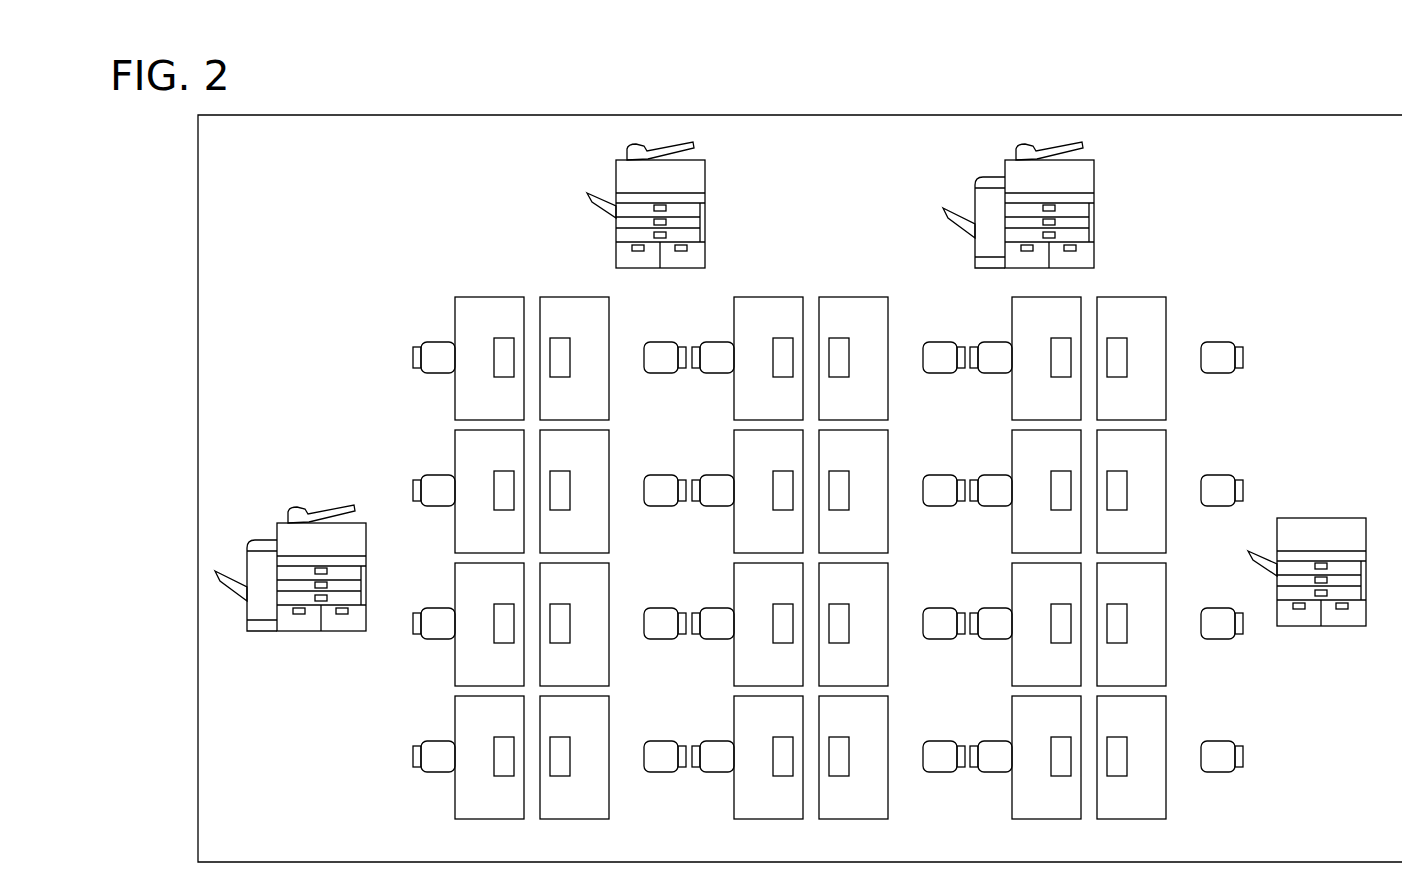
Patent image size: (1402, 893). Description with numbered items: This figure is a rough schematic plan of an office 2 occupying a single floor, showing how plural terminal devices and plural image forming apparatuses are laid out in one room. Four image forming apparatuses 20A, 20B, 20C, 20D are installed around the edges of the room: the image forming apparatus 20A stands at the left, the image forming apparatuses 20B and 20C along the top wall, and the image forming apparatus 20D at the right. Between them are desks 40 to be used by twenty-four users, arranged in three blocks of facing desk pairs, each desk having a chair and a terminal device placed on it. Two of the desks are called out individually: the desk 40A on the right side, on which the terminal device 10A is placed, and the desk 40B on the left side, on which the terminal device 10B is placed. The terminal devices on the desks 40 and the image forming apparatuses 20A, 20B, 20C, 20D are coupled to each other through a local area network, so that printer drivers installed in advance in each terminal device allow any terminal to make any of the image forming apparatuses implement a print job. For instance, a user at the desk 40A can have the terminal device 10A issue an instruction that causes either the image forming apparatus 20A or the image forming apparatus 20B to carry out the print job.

The office 2 is at (1361, 115).
The terminal device 10A is at (1120, 497).
The terminal device 10B is at (492, 492).
The image forming apparatus 20A is at (317, 507).
The image forming apparatus 20B is at (707, 173).
The image forming apparatus 20C is at (1096, 173).
The image forming apparatus 20D is at (1323, 518).
The desk 40 is at (1132, 296).
The desk 40A is at (1157, 451).
The desk 40B is at (468, 449).